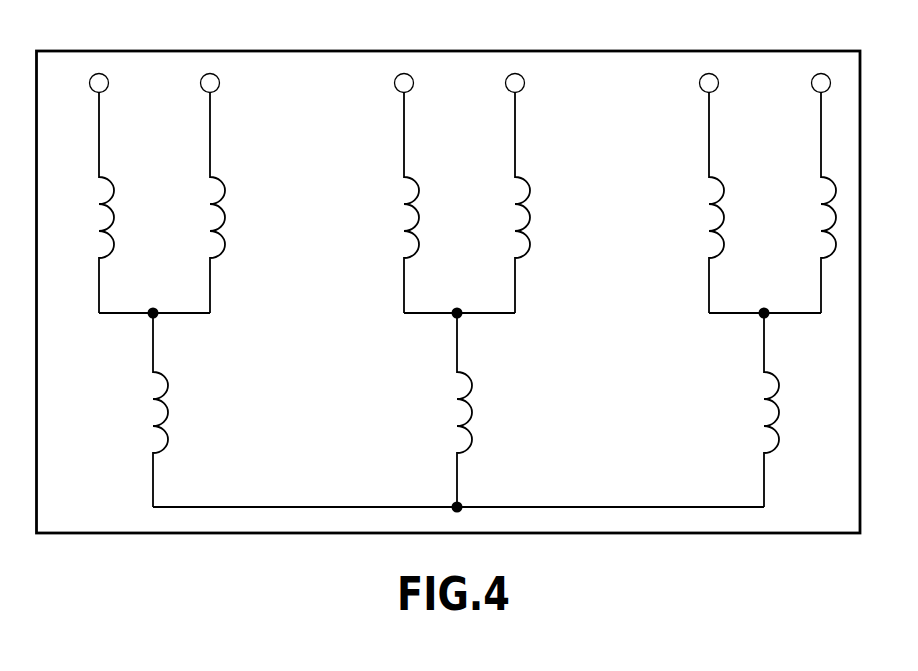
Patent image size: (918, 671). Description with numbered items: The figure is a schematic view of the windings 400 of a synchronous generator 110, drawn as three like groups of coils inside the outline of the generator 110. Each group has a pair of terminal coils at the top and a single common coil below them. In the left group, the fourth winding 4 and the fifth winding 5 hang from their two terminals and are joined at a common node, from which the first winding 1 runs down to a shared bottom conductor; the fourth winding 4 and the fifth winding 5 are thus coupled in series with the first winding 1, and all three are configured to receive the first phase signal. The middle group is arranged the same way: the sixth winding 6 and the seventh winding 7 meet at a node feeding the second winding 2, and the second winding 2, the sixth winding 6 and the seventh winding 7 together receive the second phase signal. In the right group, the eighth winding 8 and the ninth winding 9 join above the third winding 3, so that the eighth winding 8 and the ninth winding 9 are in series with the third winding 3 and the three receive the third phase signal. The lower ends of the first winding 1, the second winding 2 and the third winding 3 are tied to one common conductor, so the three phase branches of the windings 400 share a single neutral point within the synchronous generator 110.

The synchronous generator 110 is at (738, 51).
The windings 400 is at (447, 256).
The winding A (first winding) 1 is at (179, 410).
The winding B (second winding) 2 is at (482, 410).
The winding C (third winding) 3 is at (790, 410).
The winding A1 (fourth winding) 4 is at (90, 203).
The winding A2 (fifth winding) 5 is at (234, 203).
The winding B1 (sixth winding) 6 is at (395, 203).
The winding B2 (seventh winding) 7 is at (537, 203).
The winding C1 (eighth winding) 8 is at (699, 203).
The winding C2 (ninth winding) 9 is at (811, 203).